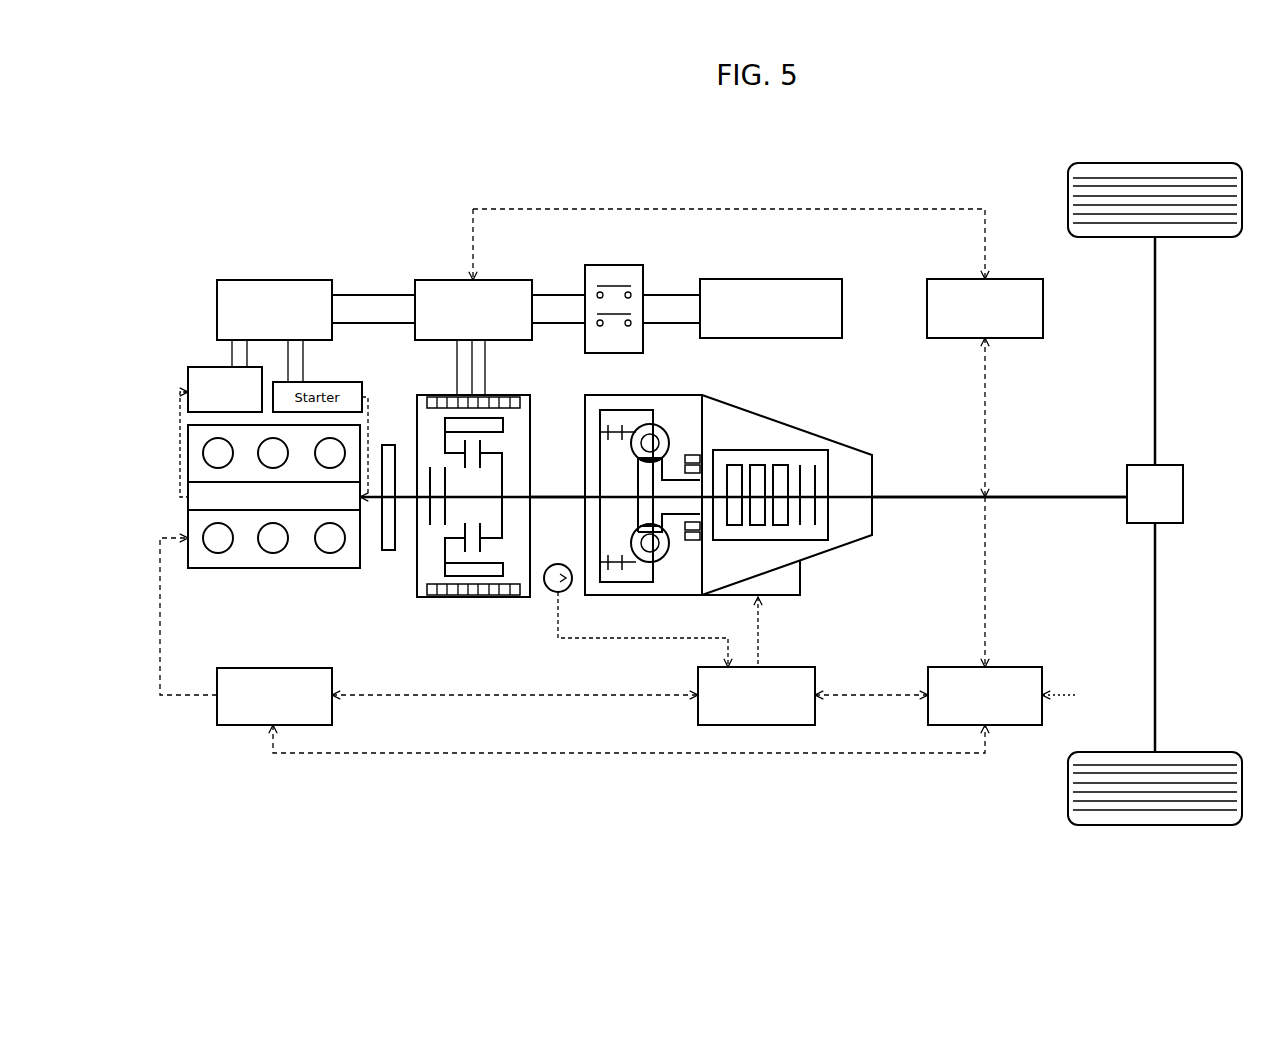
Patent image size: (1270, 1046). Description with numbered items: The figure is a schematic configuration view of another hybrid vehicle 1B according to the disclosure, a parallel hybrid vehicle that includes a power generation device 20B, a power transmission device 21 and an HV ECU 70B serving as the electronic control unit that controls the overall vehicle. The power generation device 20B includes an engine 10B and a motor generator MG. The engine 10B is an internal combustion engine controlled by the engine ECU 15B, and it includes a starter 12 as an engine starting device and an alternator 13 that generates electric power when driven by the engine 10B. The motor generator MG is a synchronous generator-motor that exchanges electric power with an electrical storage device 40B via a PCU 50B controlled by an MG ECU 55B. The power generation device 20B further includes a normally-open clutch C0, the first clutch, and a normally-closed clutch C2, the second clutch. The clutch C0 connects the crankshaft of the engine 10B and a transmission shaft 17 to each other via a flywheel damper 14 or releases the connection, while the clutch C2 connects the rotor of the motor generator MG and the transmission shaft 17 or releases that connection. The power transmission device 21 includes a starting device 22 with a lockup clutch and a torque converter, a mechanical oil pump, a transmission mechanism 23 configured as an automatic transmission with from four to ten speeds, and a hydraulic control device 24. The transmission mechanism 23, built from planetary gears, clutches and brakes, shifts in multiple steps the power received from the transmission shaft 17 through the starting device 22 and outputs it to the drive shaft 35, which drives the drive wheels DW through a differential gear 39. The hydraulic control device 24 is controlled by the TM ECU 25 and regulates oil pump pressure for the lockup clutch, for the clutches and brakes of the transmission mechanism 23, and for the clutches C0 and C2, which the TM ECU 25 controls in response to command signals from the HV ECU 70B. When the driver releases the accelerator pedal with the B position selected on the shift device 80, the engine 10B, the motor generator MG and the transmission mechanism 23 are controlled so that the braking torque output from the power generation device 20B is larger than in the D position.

The hybrid vehicle 1B is at (275, 181).
The starter 12 is at (346, 378).
The alternator 13 is at (202, 367).
The engine 10B is at (266, 570).
The flywheel damper 14 is at (393, 441).
The motor generator MG is at (473, 598).
The normally-closed clutch C2 is at (492, 446).
The normally-open clutch C0 is at (428, 522).
The power generation device 20B is at (245, 640).
The transmission shaft 17 is at (549, 494).
The power transmission device 21 is at (854, 449).
The starting device 22 is at (680, 432).
The transmission mechanism 23 is at (805, 450).
The hydraulic control device 24 is at (804, 577).
The transmission electronic control unit 25 is at (818, 672).
The engine ECU 15B is at (232, 727).
The PCU 50B is at (493, 279).
The electrical storage device 40B is at (756, 279).
The MG ECU 55B is at (955, 279).
The HV ECU 70B is at (1010, 667).
The shift device 80 is at (1076, 697).
The drive shaft 35 is at (1000, 500).
The differential gear 39 is at (1184, 494).
The drive wheels DW is at (1143, 163).